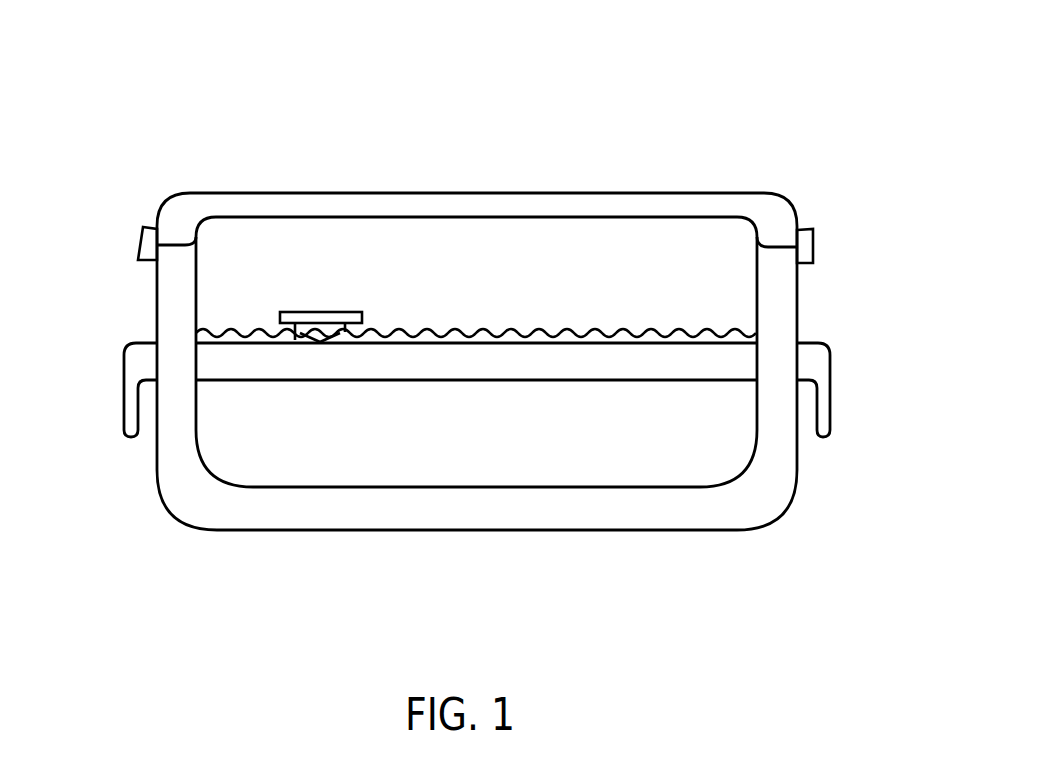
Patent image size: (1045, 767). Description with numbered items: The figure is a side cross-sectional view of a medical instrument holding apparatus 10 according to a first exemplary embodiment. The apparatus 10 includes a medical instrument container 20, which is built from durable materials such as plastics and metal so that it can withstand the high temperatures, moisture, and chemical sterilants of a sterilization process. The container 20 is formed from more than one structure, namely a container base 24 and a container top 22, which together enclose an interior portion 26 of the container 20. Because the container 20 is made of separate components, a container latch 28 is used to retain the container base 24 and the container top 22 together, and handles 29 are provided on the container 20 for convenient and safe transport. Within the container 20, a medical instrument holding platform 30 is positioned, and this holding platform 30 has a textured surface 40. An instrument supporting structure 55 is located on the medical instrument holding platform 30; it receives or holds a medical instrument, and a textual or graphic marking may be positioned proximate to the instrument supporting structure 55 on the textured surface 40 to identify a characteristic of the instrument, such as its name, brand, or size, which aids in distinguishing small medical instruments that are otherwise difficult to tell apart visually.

The medical instrument holding apparatus 10 is at (285, 29).
The medical instrument container 20 is at (735, 173).
The container top 22 is at (777, 203).
The container base 24 is at (800, 313).
The interior portion 26 is at (477, 285).
The container latch 28 is at (140, 245).
The handle 29 is at (123, 393).
The medical instrument holding platform 30 is at (692, 360).
The textured surface 40 is at (647, 333).
The instrument supporting structure 55 is at (316, 312).